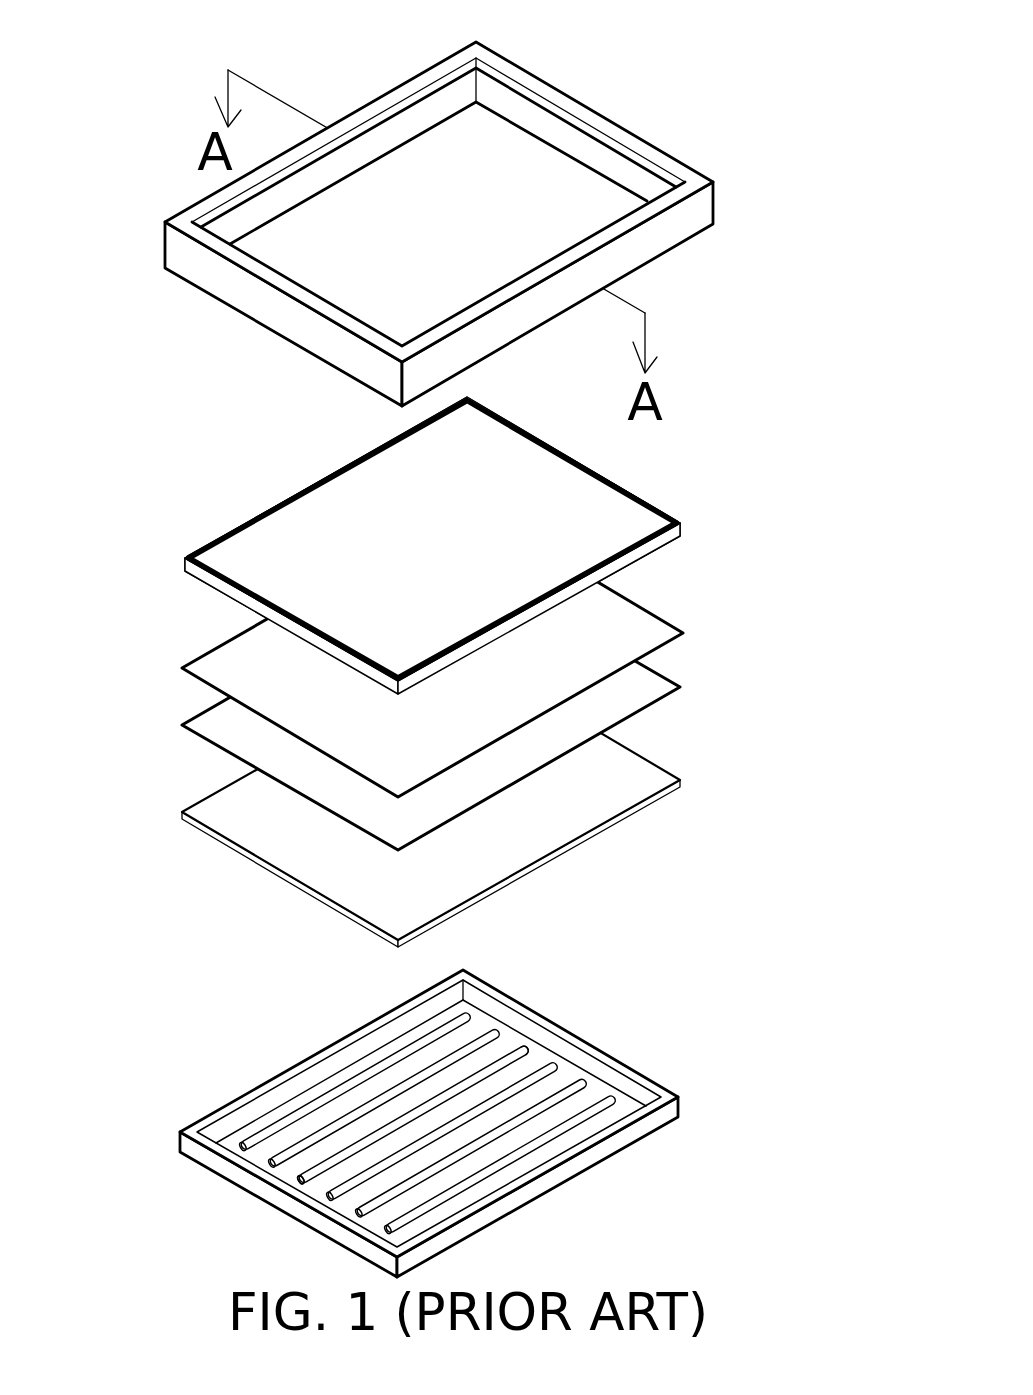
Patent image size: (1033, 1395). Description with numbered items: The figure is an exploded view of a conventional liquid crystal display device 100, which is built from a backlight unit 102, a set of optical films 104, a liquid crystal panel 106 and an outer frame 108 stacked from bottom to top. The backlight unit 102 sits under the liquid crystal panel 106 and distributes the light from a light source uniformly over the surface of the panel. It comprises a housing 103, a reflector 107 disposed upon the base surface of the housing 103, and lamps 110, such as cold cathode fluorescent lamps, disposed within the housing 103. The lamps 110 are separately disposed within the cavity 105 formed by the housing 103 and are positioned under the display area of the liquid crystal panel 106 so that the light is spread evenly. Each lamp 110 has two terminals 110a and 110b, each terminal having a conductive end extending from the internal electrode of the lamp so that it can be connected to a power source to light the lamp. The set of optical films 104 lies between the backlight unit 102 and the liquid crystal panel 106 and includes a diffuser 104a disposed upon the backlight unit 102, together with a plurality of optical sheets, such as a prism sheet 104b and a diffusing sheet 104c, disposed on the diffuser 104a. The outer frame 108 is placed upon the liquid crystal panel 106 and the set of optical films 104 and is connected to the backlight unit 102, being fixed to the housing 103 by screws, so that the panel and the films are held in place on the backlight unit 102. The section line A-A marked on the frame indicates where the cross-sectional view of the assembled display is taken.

The liquid crystal display device 100 is at (140, 73).
The backlight unit 102 is at (237, 1095).
The housing 103 is at (297, 1066).
The set of optical films 104 is at (525, 725).
The diffuser 104a is at (643, 770).
The prism sheet 104b is at (655, 688).
The diffusing sheet 104c is at (628, 623).
The cavity 105 is at (370, 1058).
The liquid crystal panel 106 is at (187, 558).
The reflector 107 is at (603, 1093).
The outer frame 108 is at (174, 253).
The lamps 110 is at (400, 1125).
The terminal 110a is at (305, 1176).
The terminal 110b is at (533, 1050).